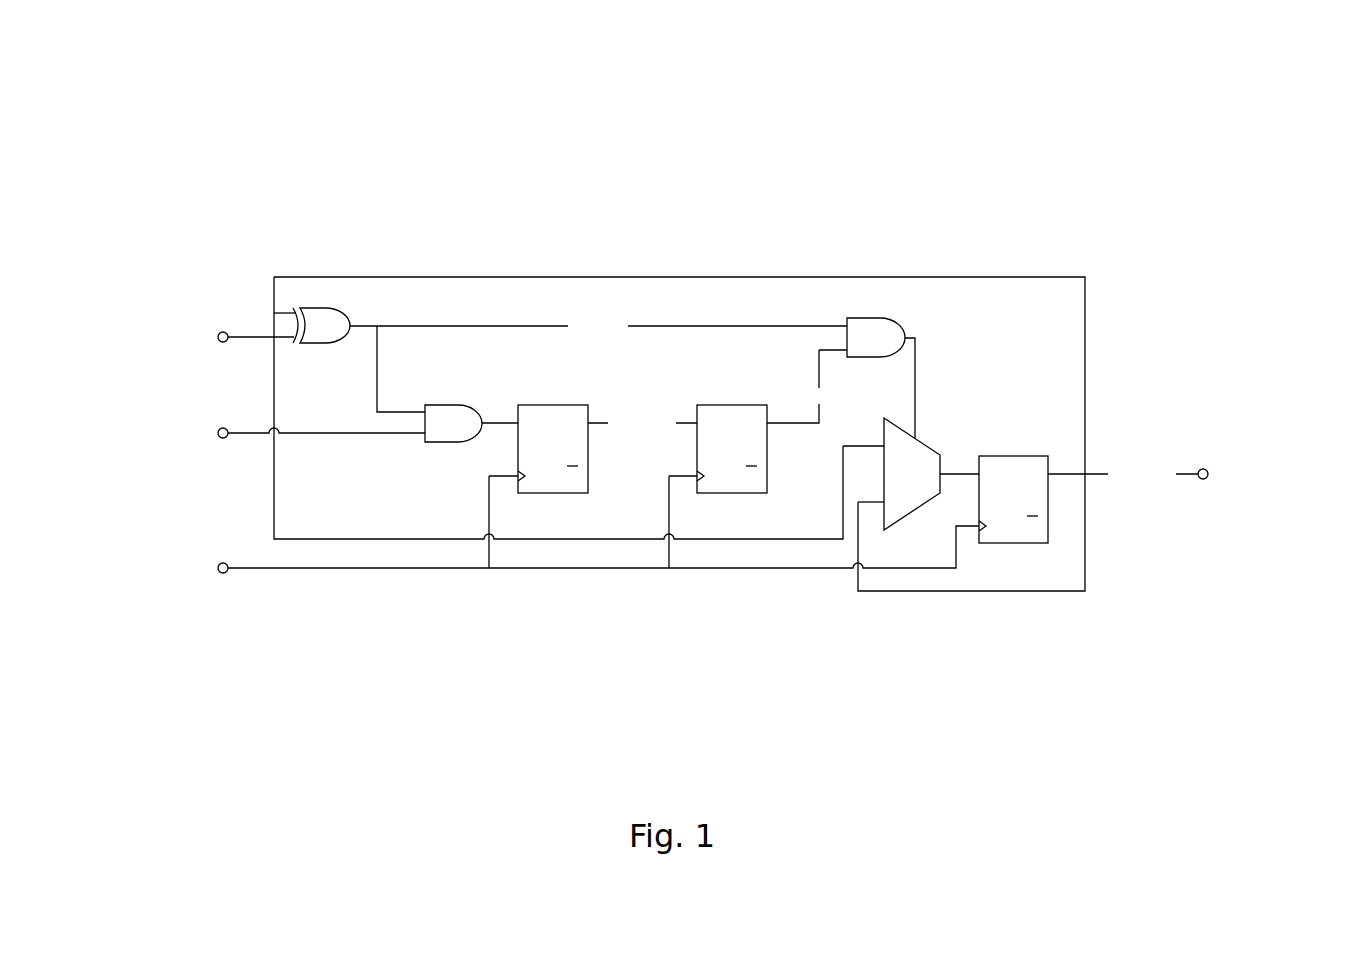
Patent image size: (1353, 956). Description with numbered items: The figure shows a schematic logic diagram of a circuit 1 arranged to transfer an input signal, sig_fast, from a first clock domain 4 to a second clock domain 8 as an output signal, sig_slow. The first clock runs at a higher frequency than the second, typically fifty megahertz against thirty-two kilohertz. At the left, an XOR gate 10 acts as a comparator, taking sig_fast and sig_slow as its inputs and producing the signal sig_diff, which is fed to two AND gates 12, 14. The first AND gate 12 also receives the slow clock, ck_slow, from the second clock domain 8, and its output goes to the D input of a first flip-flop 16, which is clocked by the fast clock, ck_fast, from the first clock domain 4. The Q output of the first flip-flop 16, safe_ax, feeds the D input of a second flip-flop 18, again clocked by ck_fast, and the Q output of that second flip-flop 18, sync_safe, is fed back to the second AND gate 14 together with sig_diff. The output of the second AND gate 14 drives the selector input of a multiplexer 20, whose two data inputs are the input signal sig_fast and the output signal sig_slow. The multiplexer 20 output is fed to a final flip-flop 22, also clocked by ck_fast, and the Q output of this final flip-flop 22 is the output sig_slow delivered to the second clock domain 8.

The circuit 1 is at (462, 208).
The first clock domain 4 is at (218, 334).
The second clock domain 8 is at (219, 436).
The XOR gate 10 is at (312, 308).
The first AND gate 12 is at (448, 443).
The second AND gate 14 is at (880, 318).
The first flip-flop 16 is at (556, 493).
The second flip-flop 18 is at (733, 493).
The multiplexer 20 is at (904, 517).
The final flip-flop 22 is at (1023, 542).